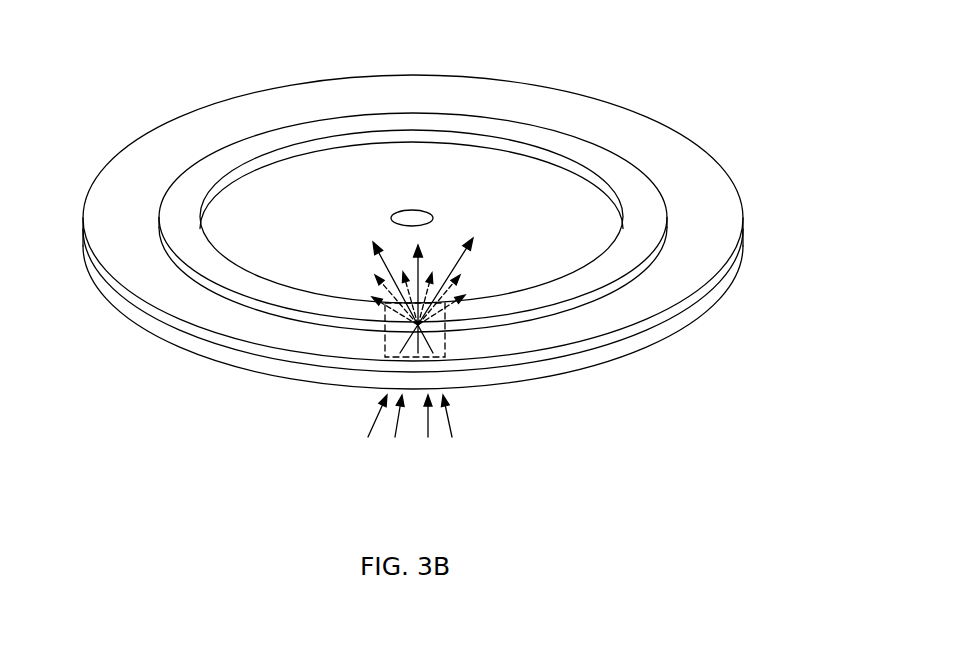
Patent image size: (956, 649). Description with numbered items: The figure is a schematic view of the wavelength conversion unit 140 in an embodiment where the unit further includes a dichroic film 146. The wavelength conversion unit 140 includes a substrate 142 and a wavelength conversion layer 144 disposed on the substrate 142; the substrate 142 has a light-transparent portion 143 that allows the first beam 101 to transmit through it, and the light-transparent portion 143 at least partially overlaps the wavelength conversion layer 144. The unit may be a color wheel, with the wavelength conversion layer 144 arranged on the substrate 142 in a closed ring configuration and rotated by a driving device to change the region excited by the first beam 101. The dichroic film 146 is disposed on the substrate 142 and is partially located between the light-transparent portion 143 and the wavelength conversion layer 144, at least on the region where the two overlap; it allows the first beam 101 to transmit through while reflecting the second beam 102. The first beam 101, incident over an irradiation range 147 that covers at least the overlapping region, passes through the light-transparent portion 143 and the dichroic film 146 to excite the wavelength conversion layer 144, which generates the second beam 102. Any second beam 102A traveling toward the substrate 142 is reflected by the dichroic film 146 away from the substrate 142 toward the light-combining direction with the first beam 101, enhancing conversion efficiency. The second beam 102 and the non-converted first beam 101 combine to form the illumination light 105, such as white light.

The wavelength conversion unit 140 is at (95, 31).
The dichroic film 146 is at (130, 263).
The substrate 142 is at (165, 338).
The light-transparent portion 143 is at (387, 380).
The wavelength conversion layer 144 is at (640, 230).
The illumination light 105 is at (577, 240).
The irradiation range 147 is at (387, 340).
The first beam 101 is at (372, 240).
The second beam 102 is at (462, 294).
The second beam traveling toward the substrate 102A is at (385, 303).